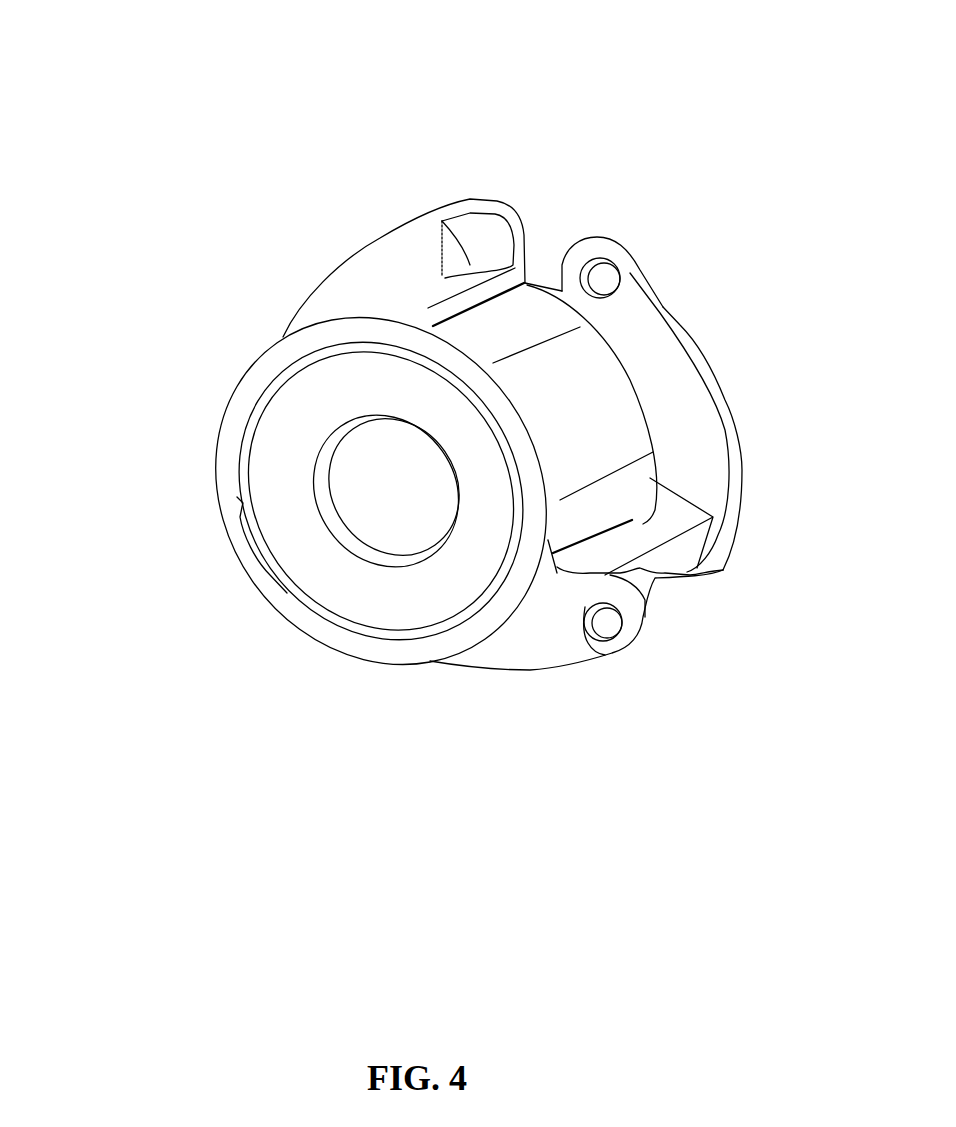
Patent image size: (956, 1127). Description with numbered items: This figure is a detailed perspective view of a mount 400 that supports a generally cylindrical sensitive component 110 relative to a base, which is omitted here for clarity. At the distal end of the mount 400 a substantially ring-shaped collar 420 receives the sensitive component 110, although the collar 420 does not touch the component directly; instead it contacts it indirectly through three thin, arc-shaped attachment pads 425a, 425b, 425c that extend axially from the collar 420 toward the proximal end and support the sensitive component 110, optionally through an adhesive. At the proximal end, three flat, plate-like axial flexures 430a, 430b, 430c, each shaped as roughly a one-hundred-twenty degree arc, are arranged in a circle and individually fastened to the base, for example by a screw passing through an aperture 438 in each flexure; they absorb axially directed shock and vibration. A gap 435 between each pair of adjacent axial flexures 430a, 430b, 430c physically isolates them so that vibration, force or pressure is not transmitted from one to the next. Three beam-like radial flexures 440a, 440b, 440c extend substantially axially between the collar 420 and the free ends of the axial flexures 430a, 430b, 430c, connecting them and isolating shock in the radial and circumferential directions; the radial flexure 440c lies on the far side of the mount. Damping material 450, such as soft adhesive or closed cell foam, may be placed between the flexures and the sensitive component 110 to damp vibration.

The mount 400 is at (320, 108).
The sensitive component 110 is at (630, 473).
The collar 420 is at (223, 498).
The attachment pad 425a is at (217, 372).
The attachment pad 425b is at (565, 396).
The attachment pad 425c is at (397, 680).
The axial flexure 430a is at (322, 293).
The axial flexure 430b is at (663, 343).
The axial flexure 430c is at (513, 648).
The gap 435 is at (545, 222).
The aperture 438 is at (601, 277).
The radial flexure 440a is at (435, 297).
The radial flexure 440b is at (585, 577).
The radial flexure 440c is at (227, 567).
The damping material 450 is at (492, 290).